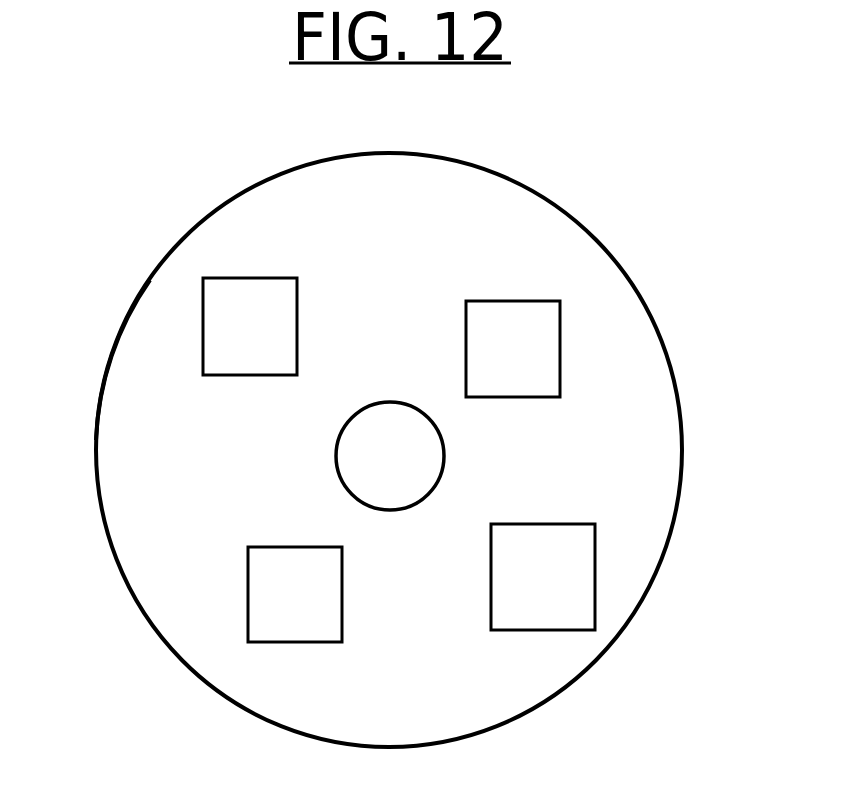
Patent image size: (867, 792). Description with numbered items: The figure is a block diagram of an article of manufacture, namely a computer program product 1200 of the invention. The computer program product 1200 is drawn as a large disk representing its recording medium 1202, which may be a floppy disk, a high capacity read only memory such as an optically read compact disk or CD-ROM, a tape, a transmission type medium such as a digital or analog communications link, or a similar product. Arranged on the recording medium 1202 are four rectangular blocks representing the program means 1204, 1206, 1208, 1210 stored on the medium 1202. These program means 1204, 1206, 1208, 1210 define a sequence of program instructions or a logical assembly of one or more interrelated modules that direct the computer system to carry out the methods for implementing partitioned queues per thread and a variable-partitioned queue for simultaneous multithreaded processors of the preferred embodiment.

The computer program product 1200 is at (641, 249).
The recording medium 1202 is at (137, 275).
The program means 1204 is at (295, 594).
The program means 1206 is at (543, 577).
The program means 1208 is at (513, 349).
The program means 1210 is at (250, 326).